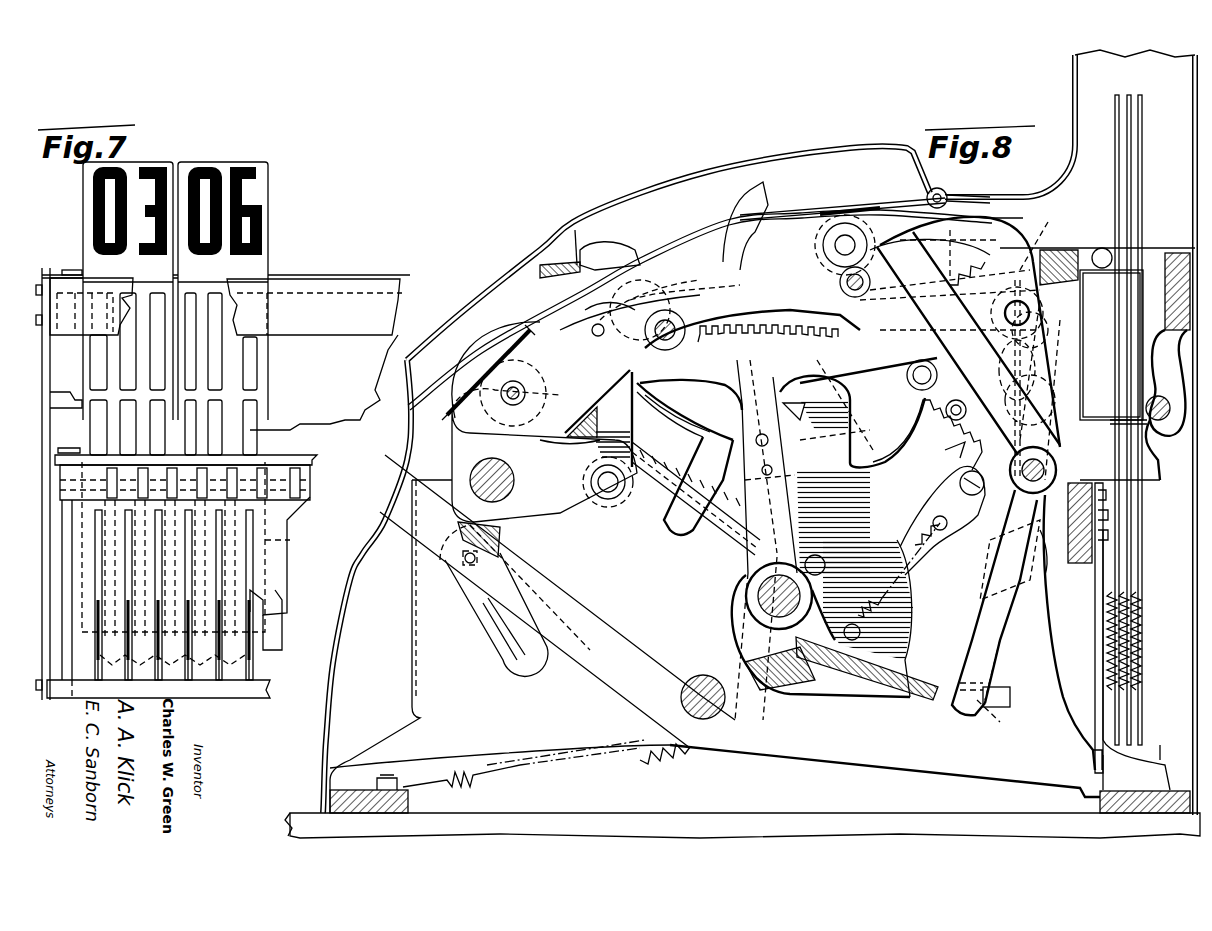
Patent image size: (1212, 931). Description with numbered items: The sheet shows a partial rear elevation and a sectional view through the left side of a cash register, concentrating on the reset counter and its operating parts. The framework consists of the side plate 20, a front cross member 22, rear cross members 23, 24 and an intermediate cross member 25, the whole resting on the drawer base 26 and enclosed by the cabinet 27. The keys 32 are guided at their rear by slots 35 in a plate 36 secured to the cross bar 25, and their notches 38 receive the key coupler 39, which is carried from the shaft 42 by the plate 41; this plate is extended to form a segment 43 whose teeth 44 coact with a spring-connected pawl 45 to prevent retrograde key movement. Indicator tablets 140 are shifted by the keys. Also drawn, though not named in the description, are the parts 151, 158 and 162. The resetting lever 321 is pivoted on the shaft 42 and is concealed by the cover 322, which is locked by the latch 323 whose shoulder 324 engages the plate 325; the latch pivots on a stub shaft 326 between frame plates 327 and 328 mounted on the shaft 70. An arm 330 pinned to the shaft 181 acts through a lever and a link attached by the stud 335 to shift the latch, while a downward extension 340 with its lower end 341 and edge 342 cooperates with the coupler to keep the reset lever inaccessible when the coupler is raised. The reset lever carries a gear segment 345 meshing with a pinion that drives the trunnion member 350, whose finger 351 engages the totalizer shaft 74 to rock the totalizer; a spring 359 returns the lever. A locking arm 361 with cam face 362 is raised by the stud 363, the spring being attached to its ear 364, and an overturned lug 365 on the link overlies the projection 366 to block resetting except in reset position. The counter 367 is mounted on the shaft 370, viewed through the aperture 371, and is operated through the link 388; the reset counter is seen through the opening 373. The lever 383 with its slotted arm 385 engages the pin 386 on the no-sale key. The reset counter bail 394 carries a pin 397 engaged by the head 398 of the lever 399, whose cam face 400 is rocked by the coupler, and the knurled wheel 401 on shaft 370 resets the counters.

In FIG. 8, the side plate 20 is at (433, 483).
In FIG. 8, the cross member 22 is at (410, 800).
In FIG. 7, the cross member 23 is at (158, 689).
In FIG. 8, the cross member 23 is at (1100, 805).
In FIG. 7, the cross member 24 is at (314, 354).
In FIG. 8, the cross member 24 is at (1165, 292).
In FIG. 7, the intermediate cross member 25 is at (182, 477).
In FIG. 8, the intermediate cross member 25 is at (1080, 565).
In FIG. 8, the drawer base 26 is at (742, 825).
In FIG. 8, the cabinet 27 is at (1032, 190).
In FIG. 7, the keys 32 is at (252, 655).
In FIG. 8, the keys 32 is at (681, 697).
In FIG. 7, the slots 35 is at (97, 572).
In FIG. 8, the slots 35 is at (1106, 585).
In FIG. 7, the plate 36 is at (80, 530).
In FIG. 8, the plate 36 is at (1106, 553).
In FIG. 8, the notches 38 is at (1010, 700).
In FIG. 8, the key coupler 39 is at (915, 680).
In FIG. 8, the plate 41 is at (852, 536).
In FIG. 8, the shaft 42 is at (752, 585).
In FIG. 8, the segment 43 is at (925, 430).
In FIG. 8, the teeth 44 is at (957, 468).
In FIG. 8, the pawl 45 is at (907, 366).
In FIG. 8, the shaft 70 is at (514, 481).
In FIG. 8, the totalizer shaft 74 is at (668, 318).
In FIG. 7, the indicator tablets 140 is at (265, 620).
In FIG. 8, the indicator tablets 140 is at (1138, 745).
In FIG. 8, the rod guide 151 is at (1058, 252).
In FIG. 8, the lever 158 is at (677, 413).
In FIG. 8, the stud 162 is at (953, 402).
In FIG. 8, the shaft 181 is at (1045, 460).
In FIG. 8, the resetting lever 321 is at (738, 200).
In FIG. 8, the cover 322 is at (722, 168).
In FIG. 8, the latch 323 is at (630, 381).
In FIG. 8, the shoulder 324 is at (595, 255).
In FIG. 8, the plate 325 is at (557, 254).
In FIG. 8, the stub shaft 326 is at (610, 492).
In FIG. 8, the frame plate 327 is at (1018, 300).
In FIG. 8, the frame plate 328 is at (600, 333).
In FIG. 8, the arm 330 is at (1055, 420).
In FIG. 8, the stud 335 is at (946, 197).
In FIG. 8, the downward extension 340 is at (1048, 585).
In FIG. 8, the lower end 341 is at (1002, 690).
In FIG. 8, the edge 342 is at (960, 618).
In FIG. 8, the gear segment 345 is at (908, 372).
In FIG. 8, the trunnion member 350 is at (665, 300).
In FIG. 8, the finger 351 is at (638, 320).
In FIG. 8, the spring 359 is at (828, 409).
In FIG. 8, the locking arm 361 is at (810, 378).
In FIG. 8, the cam face 362 is at (725, 430).
In FIG. 8, the stud 363 is at (710, 395).
In FIG. 8, the ear 364 is at (1043, 237).
In FIG. 8, the overturned lug 365 is at (822, 245).
In FIG. 8, the projection 366 is at (685, 282).
In FIG. 8, the counter 367 is at (570, 445).
In FIG. 8, the shaft 370 is at (525, 388).
In FIG. 8, the aperture 371 is at (470, 364).
In FIG. 8, the opening 373 is at (862, 210).
In FIG. 8, the lever 383 is at (752, 329).
In FIG. 8, the slotted arm 385 is at (515, 603).
In FIG. 8, the pin 386 is at (485, 555).
In FIG. 8, the link 388 is at (662, 465).
In FIG. 8, the operating bail 394 is at (880, 248).
In FIG. 8, the pin 397 is at (840, 282).
In FIG. 8, the head 398 is at (987, 493).
In FIG. 8, the lever 399 is at (1052, 415).
In FIG. 8, the cam face 400 is at (965, 575).
In FIG. 8, the knurled wheel 401 is at (472, 352).